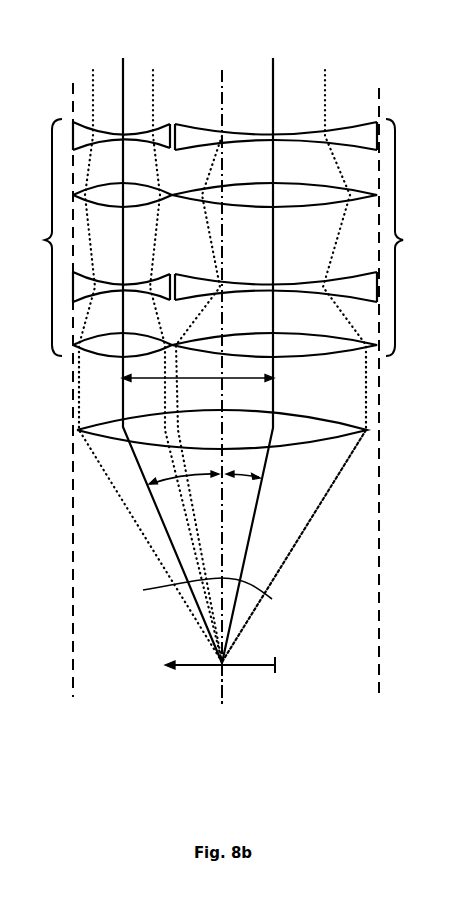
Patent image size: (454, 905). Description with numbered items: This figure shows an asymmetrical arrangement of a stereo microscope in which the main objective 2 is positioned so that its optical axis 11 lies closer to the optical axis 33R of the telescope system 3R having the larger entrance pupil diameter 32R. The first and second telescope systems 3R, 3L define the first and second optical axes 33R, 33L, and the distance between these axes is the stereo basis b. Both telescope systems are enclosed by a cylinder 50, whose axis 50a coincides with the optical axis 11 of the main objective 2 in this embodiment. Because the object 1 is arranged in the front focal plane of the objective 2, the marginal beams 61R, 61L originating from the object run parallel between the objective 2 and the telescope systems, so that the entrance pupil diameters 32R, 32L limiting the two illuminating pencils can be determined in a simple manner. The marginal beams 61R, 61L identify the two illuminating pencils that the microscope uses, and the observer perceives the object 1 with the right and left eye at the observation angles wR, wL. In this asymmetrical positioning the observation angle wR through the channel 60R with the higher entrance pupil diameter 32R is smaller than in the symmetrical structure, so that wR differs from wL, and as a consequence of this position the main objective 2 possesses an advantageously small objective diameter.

The object 1 is at (184, 663).
The main objective 2 is at (75, 431).
The second telescope system 3L is at (52, 279).
The first telescope system 3R is at (395, 279).
The optical axis of the main objective 11 is at (222, 97).
The diameter of the left entrance pupil 32L is at (78, 400).
The diameter of the right entrance pupil 32R is at (367, 398).
The second optical axis 33L is at (123, 72).
The first optical axis 33R is at (273, 77).
The cylinder 50 is at (73, 638).
The axis of the cylinder 50a is at (220, 694).
The right channel 60R is at (270, 543).
The left marginal beam 61L is at (183, 607).
The right marginal beam 61R is at (245, 622).
The stereo basis b is at (198, 372).
The left observation angle wL is at (149, 485).
The right observation angle wR is at (260, 478).